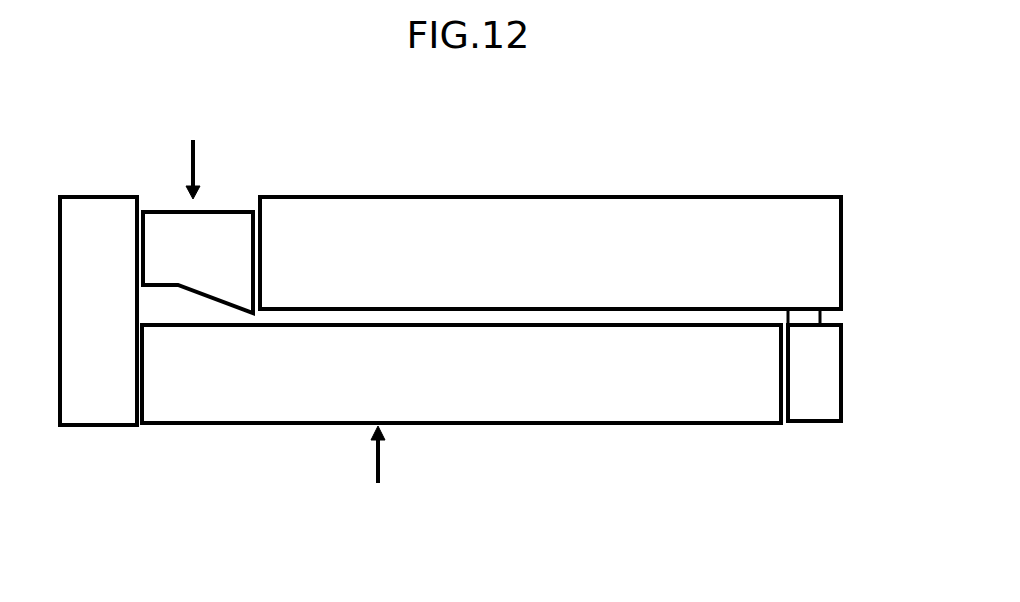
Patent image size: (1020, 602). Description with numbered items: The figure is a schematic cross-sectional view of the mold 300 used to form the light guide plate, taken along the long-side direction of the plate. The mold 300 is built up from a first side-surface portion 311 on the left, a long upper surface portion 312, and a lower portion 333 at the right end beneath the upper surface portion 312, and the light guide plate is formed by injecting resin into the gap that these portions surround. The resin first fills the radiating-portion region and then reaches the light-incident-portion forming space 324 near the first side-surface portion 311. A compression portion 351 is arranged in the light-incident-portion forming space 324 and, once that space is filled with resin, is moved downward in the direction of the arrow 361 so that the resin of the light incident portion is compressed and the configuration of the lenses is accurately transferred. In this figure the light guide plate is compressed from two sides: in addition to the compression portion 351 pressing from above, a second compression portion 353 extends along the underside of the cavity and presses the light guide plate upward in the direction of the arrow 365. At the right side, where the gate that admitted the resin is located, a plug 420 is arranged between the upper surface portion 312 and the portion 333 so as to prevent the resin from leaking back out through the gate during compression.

The mold 300 is at (445, 465).
The first side-surface portion 311 is at (77, 213).
The upper surface portion 312 is at (613, 214).
The light-incident-portion forming space 324 is at (187, 315).
The end block 333 is at (818, 378).
The compression portion 351 is at (227, 220).
The compression portion 353 is at (537, 410).
The arrow 361 is at (187, 160).
The arrow 365 is at (375, 460).
The plug 420 is at (820, 316).